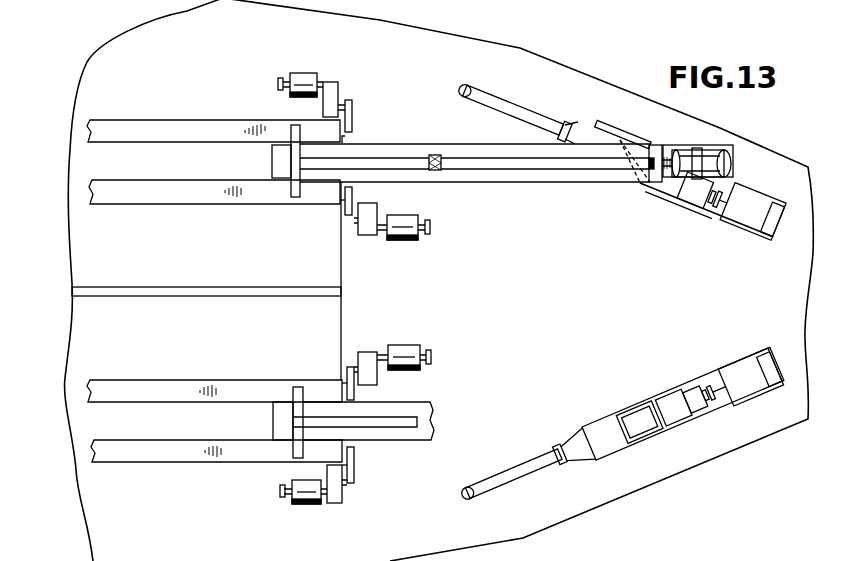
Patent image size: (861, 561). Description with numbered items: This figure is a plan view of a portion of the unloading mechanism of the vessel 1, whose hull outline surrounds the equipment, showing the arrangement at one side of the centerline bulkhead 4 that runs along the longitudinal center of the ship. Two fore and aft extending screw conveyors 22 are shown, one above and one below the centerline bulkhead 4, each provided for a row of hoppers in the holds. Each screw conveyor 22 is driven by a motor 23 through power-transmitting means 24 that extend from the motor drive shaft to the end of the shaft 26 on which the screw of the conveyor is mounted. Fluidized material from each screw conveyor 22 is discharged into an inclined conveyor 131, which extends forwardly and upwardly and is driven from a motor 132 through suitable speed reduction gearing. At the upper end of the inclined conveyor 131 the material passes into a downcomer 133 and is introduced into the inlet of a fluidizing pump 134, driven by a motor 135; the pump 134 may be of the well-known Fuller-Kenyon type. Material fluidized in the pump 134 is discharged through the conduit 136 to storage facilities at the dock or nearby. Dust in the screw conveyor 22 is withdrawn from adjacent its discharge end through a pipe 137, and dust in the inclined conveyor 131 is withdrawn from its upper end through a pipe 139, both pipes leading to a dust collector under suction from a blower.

The vessel 1 is at (770, 141).
The centerline bulkhead 4 is at (151, 268).
The screw conveyors 22 is at (172, 142).
The motors 23 is at (305, 73).
The power-transmitting means 24 is at (336, 92).
The shafts 26 is at (345, 138).
The inclined conveyor 131 is at (508, 183).
The motor 132 is at (733, 168).
The downcomer 133 is at (650, 185).
The fluidizing pump 134 is at (680, 195).
The motor 135 is at (745, 215).
The conduit 136 is at (522, 113).
The pipe 137 is at (292, 128).
The pipe 139 is at (583, 170).